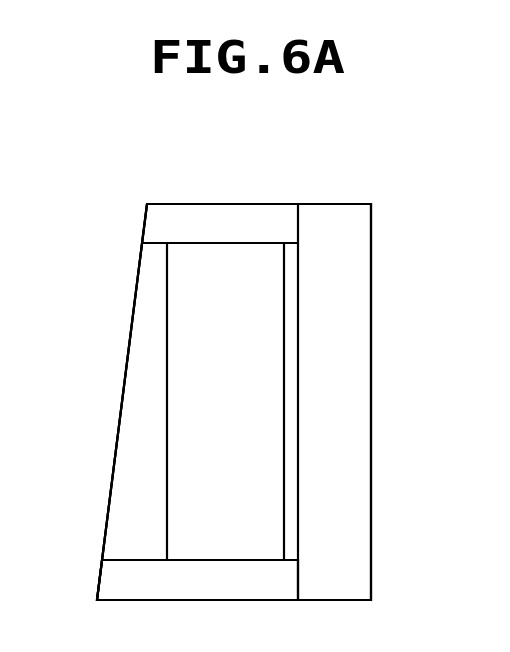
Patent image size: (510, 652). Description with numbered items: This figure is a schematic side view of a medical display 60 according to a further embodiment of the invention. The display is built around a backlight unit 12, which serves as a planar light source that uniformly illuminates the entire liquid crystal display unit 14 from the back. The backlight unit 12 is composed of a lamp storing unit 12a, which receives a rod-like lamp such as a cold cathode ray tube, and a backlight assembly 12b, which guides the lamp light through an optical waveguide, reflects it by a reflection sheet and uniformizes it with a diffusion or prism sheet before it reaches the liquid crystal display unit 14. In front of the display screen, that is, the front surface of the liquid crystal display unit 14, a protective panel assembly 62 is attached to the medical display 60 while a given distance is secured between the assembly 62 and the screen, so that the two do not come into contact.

The medical display 60 is at (385, 178).
The backlight unit 12 is at (142, 300).
The lamp storing unit 12a is at (107, 585).
The backlight assembly 12b is at (108, 512).
The liquid crystal display unit 14 is at (240, 253).
The protective panel assembly 62 is at (328, 218).